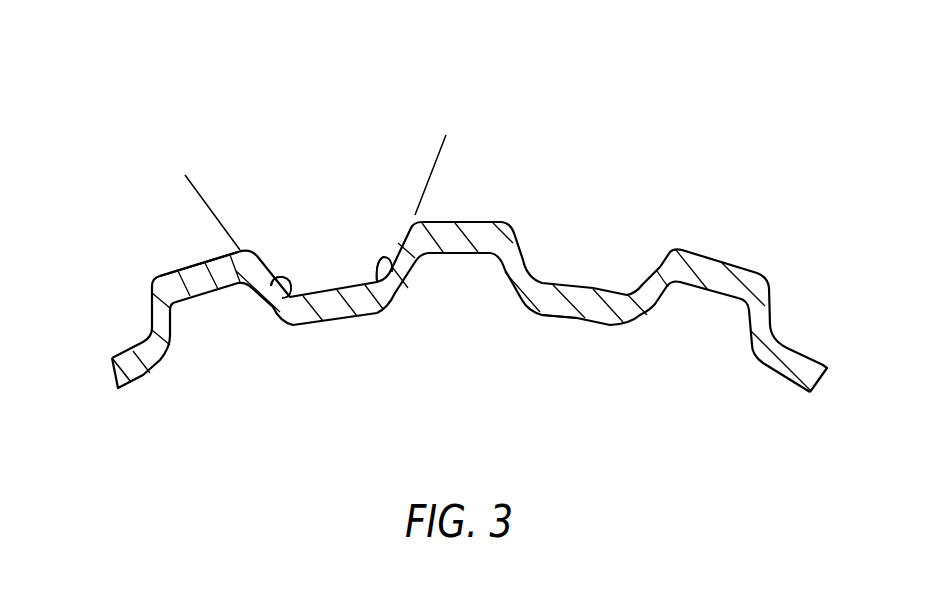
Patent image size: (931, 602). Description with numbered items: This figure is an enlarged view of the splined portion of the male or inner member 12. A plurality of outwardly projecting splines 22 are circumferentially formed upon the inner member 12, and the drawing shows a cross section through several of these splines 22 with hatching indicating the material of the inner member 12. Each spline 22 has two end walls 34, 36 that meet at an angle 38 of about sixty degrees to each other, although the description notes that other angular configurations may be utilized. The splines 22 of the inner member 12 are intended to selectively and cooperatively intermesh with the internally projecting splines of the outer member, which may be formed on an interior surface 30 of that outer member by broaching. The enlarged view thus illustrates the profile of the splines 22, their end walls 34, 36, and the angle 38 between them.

The inner member 12 is at (147, 105).
The spline 22 is at (180, 268).
The interior surface 30 is at (587, 325).
The end wall 34 is at (390, 278).
The end wall 36 is at (288, 292).
The angle 38 is at (437, 157).